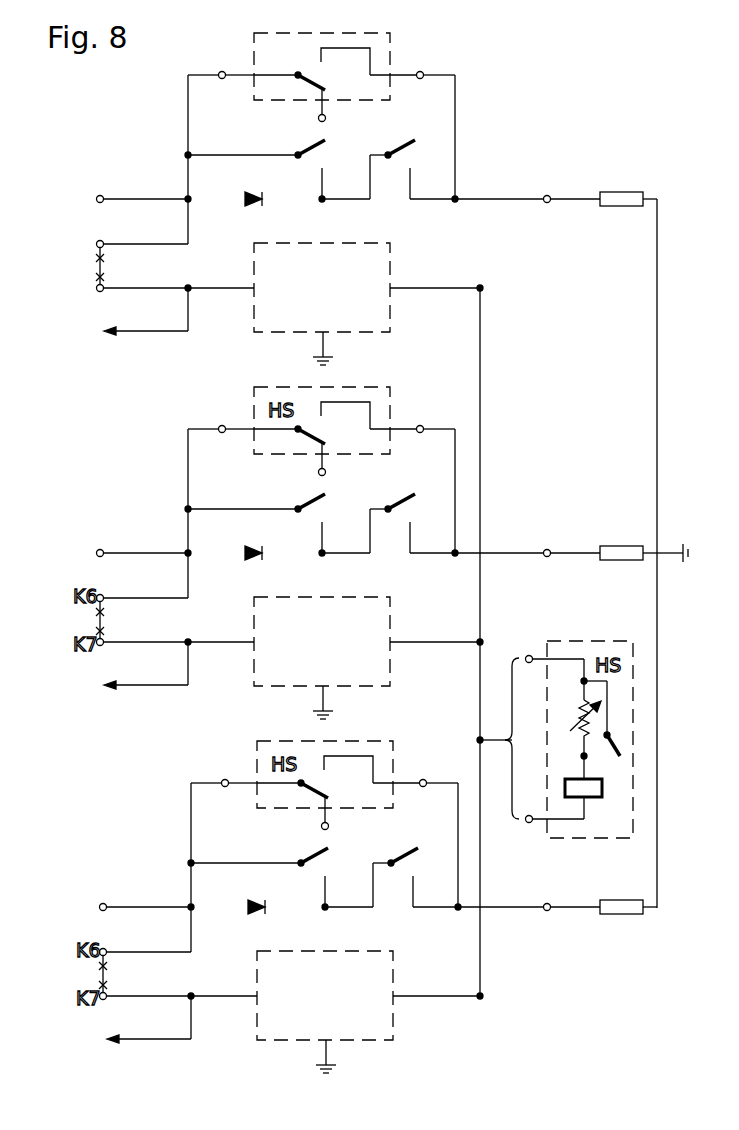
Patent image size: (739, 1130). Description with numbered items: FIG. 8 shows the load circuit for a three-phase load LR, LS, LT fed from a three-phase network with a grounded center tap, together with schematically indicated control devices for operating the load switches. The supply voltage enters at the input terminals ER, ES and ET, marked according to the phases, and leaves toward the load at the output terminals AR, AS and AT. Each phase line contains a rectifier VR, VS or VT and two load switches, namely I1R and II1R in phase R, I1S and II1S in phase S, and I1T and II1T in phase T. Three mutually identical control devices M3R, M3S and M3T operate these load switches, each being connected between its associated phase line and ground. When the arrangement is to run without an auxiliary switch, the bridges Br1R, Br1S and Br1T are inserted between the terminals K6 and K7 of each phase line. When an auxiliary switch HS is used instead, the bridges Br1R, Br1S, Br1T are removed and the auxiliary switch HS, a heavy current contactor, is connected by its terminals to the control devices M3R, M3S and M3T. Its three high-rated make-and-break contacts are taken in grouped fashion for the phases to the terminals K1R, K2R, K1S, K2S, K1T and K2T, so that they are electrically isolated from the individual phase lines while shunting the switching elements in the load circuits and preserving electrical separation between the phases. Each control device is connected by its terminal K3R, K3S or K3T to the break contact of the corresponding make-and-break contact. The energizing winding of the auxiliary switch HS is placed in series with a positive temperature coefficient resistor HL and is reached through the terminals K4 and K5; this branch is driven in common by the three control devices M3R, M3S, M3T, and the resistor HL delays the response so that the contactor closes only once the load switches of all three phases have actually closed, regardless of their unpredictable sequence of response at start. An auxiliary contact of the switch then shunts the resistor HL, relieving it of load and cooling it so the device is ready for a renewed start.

The terminal K1 of phase R K1R is at (221, 63).
The terminal K2 of phase R K2R is at (412, 63).
The terminal K3R is at (194, 217).
The terminal K1 of phase S K1S is at (221, 417).
The terminal K2 of phase S K2S is at (412, 417).
The terminal K3S is at (194, 571).
The terminal K1 of phase T K1T is at (224, 771).
The terminal K2 of phase T K2T is at (415, 771).
The terminal K3T is at (197, 925).
The auxiliary switch HS is at (322, 66).
The load switch II1R is at (273, 171).
The load switch I1R is at (388, 169).
The load switch II1S is at (273, 525).
The load switch I1S is at (388, 523).
The load switch II1T is at (276, 879).
The load switch I1T is at (391, 877).
The rectifier VR is at (256, 187).
The rectifier VS is at (255, 541).
The rectifier VT is at (258, 895).
The input terminal ER is at (130, 201).
The input terminal ES is at (130, 555).
The input terminal ET is at (133, 909).
The output terminal AR is at (518, 201).
The output terminal AS is at (517, 555).
The output terminal AT is at (518, 909).
The load LR is at (604, 187).
The load LS is at (604, 541).
The load LT is at (604, 895).
The terminal K6 is at (130, 242).
The terminal K7 is at (163, 290).
The bridge Br1R is at (97, 265).
The bridge Br1S is at (58, 620).
The bridge Br1T is at (61, 974).
The control device M3R is at (368, 304).
The control device M3S is at (368, 658).
The control device M3T is at (370, 1012).
The terminal K4 is at (552, 659).
The terminal K5 is at (552, 835).
The positive temperature coefficient resistor HL is at (577, 720).